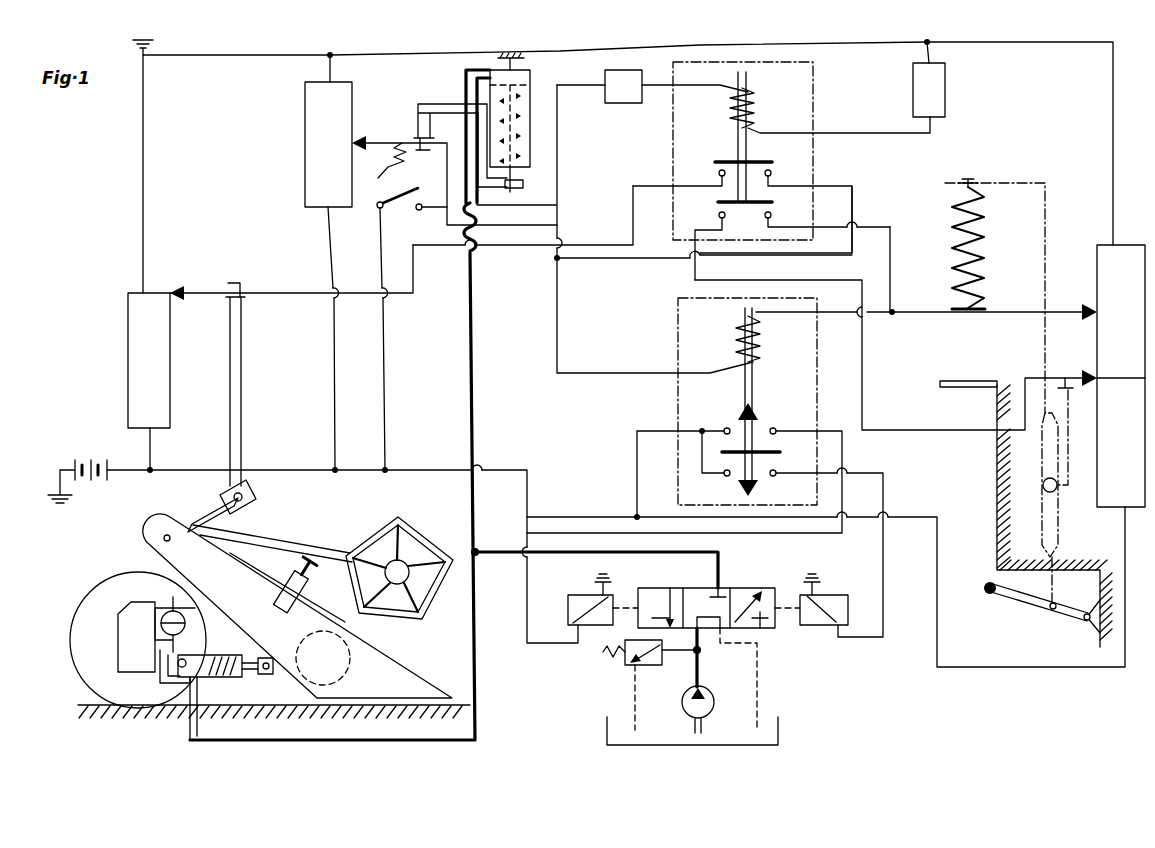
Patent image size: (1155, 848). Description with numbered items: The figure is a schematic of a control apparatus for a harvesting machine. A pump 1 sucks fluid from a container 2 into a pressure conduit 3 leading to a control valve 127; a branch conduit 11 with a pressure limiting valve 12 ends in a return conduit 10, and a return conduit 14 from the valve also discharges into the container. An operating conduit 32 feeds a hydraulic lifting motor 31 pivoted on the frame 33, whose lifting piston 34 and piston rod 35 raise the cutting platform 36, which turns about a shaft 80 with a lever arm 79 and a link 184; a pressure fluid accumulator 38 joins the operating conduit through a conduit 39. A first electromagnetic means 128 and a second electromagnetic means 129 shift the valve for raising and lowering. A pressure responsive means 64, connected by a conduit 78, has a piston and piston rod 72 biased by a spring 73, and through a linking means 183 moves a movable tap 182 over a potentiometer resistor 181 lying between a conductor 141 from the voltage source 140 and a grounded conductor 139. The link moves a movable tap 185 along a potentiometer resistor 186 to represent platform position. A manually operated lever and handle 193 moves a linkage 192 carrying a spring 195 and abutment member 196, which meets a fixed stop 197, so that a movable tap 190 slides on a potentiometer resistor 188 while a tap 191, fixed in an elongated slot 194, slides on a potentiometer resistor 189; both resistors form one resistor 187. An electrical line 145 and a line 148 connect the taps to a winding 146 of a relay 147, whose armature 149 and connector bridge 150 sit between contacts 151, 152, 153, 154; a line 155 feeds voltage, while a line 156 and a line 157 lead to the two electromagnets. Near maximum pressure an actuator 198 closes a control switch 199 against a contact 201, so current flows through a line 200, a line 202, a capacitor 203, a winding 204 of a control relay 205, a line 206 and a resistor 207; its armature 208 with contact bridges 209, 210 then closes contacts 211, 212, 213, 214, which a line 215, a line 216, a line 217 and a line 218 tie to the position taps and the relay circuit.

The pump 1 is at (712, 709).
The container 2 is at (780, 726).
The pressure conduit 3 is at (700, 668).
The return conduit 10 is at (633, 692).
The branch conduit 11 is at (679, 661).
The pressure limiting valve 12 is at (622, 662).
The return conduit 14 is at (760, 669).
The hydraulic lifting motor 31 is at (215, 678).
The operating conduit 32 is at (489, 562).
The frame 33 is at (118, 637).
The lifting piston 34 is at (214, 658).
The piston rod 35 is at (257, 681).
The cutting platform 36 is at (395, 672).
The pressure fluid accumulator 38 is at (170, 611).
The conduit 39 is at (160, 680).
The pressure responsive means 64 is at (550, 93).
The piston and piston rod 72 is at (483, 227).
The spring 73 is at (514, 166).
The conduit 78 is at (478, 420).
The lever arm 79 is at (210, 516).
The shaft 80 is at (166, 534).
The control valve 127 is at (742, 583).
The first electromagnetic means 128 is at (598, 596).
The second electromagnetic means 129 is at (834, 596).
The conductor 139 is at (623, 166).
The voltage source 140 is at (75, 460).
The conductor 141 is at (289, 470).
The electrical line 145 is at (557, 332).
The winding 146 is at (736, 334).
The relay 147 is at (678, 320).
The line 148 is at (893, 316).
The armature 149 is at (752, 424).
The connector bridge 150 is at (770, 452).
The contact 151 is at (723, 427).
The contact 152 is at (777, 431).
The contact 153 is at (721, 480).
The contact 154 is at (777, 478).
The line 155 is at (637, 478).
The line 156 is at (843, 472).
The line 157 is at (885, 492).
The potentiometer resistor 181 is at (305, 180).
The movable tap 182 is at (378, 137).
The linking means 183 is at (441, 105).
The link 184 is at (242, 402).
The movable tap 185 is at (176, 288).
The potentiometer resistor 186 is at (128, 326).
The resistor 187 is at (1090, 365).
The potentiometer resistor 188 is at (1097, 275).
The potentiometer resistor 189 is at (1056, 490).
The movable tap 190 is at (1087, 306).
The tap 191 is at (1077, 437).
The linkage 192 is at (1050, 232).
The manually operated lever and handle 193 is at (1034, 605).
The elongated slot 194 is at (1060, 534).
The spring 195 is at (952, 245).
The abutment member 196 is at (972, 316).
The fixed stop 197 is at (958, 380).
The actuator 198 is at (381, 169).
The control switch 199 is at (397, 210).
The line 200 is at (383, 268).
The contact 201 is at (420, 212).
The line 202 is at (560, 143).
The capacitor 203 is at (626, 103).
The winding 204 is at (752, 95).
The control relay 205 is at (813, 78).
The line 206 is at (882, 131).
The resistor 207 is at (945, 86).
The armature 208 is at (736, 148).
The contact bridge 209 is at (758, 160).
The contact bridge 210 is at (753, 206).
The contact 211 is at (718, 174).
The contact 212 is at (771, 174).
The contact 213 is at (718, 214).
The contact 214 is at (827, 215).
The line 215 is at (588, 243).
The line 216 is at (853, 210).
The line 217 is at (864, 372).
The line 218 is at (892, 285).